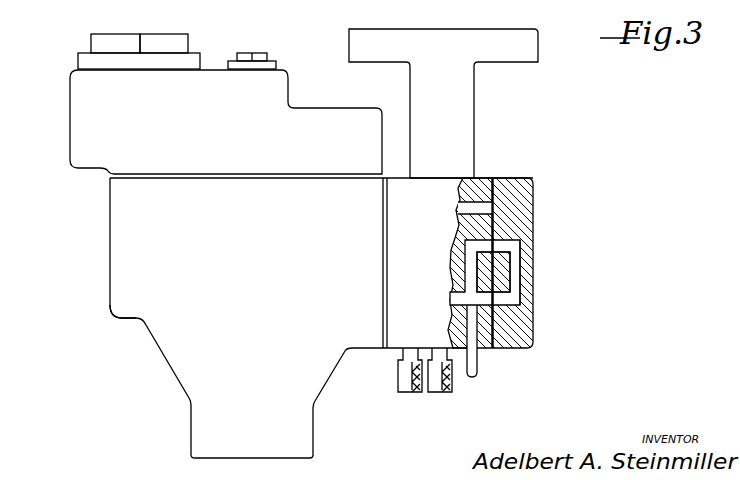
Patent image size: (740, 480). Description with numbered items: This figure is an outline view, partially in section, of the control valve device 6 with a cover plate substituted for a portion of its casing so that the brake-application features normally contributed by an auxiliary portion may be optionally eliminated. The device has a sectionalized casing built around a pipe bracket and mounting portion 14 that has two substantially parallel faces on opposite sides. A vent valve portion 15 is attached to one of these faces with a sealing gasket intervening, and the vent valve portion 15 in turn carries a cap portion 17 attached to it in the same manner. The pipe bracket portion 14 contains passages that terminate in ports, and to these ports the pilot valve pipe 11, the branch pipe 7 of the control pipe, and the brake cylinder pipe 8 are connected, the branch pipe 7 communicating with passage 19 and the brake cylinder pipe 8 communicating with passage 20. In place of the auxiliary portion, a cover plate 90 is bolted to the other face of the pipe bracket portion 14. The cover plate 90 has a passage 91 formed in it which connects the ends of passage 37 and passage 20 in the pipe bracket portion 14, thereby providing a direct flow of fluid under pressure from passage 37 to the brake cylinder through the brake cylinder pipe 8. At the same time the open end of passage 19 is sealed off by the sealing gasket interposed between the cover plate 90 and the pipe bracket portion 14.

The cap portion 17 is at (78, 112).
The vent valve portion 15 is at (118, 243).
The control valve device 6 is at (114, 318).
The pipe bracket and mounting portion 14 is at (383, 188).
The cover plate 90 is at (525, 181).
The passage 19 is at (474, 210).
The passage 91 is at (513, 262).
The passage 37 is at (533, 323).
The passage 20 is at (481, 346).
The pilot valve pipe 11 is at (405, 392).
The branch pipe 7 is at (435, 392).
The brake cylinder pipe 8 is at (471, 374).